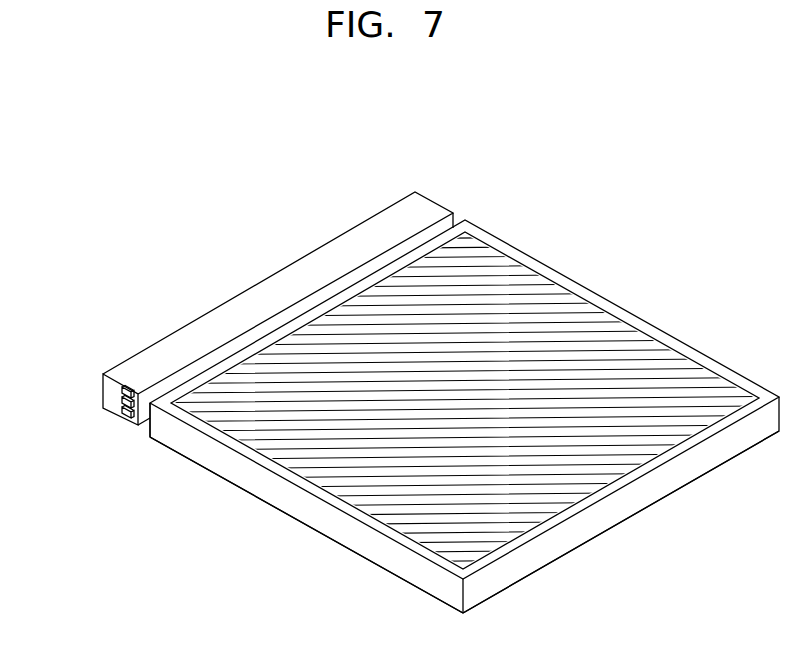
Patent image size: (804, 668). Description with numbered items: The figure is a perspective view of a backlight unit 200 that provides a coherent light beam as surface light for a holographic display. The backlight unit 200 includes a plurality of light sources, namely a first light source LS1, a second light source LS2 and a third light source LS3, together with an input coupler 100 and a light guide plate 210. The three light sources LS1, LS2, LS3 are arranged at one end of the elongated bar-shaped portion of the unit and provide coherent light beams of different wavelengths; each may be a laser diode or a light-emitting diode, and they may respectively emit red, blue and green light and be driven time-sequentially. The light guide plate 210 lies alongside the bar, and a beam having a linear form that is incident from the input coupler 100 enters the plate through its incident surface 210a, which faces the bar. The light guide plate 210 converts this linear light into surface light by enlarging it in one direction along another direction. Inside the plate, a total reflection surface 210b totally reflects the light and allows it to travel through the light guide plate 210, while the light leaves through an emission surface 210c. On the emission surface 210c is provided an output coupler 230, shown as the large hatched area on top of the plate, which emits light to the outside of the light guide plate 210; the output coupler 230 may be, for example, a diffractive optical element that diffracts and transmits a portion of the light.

The input coupler 100 is at (441, 379).
The backlight unit 200 is at (202, 200).
The light guide plate 210 is at (613, 512).
The incident surface 210a is at (139, 427).
The total reflection surface 210b is at (395, 577).
The emission surface 210c is at (648, 326).
The output coupler 230 is at (547, 283).
The first light source LS1 is at (122, 390).
The second light source LS2 is at (122, 400).
The third light source LS3 is at (122, 410).